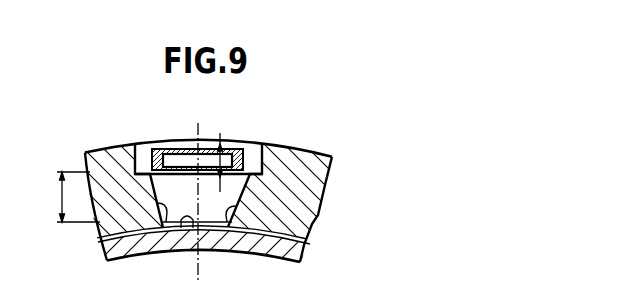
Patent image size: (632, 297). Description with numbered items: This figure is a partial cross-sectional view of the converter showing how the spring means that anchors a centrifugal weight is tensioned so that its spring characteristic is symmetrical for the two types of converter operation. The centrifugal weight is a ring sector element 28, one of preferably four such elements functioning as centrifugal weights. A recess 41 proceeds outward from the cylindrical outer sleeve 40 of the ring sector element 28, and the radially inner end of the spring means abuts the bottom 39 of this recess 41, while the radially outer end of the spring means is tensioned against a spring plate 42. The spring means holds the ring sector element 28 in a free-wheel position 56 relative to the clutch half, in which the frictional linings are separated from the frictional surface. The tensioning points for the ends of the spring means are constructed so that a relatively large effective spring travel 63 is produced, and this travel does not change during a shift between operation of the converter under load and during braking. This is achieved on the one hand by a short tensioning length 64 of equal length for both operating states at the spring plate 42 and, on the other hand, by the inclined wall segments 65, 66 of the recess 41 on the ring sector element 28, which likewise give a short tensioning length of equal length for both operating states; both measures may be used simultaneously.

The ring sector element 28 is at (297, 176).
The cylindrical outer sleeve 40 is at (278, 143).
The recess 41 is at (138, 143).
The spring plate 42 is at (170, 145).
The free-wheel position 56 is at (197, 127).
The effective spring travel 63 is at (62, 198).
The tensioning length 64 is at (230, 145).
The inclined wall segment 65 is at (156, 252).
The inclined wall segment 66 is at (226, 252).
The bottom 39 is at (180, 252).